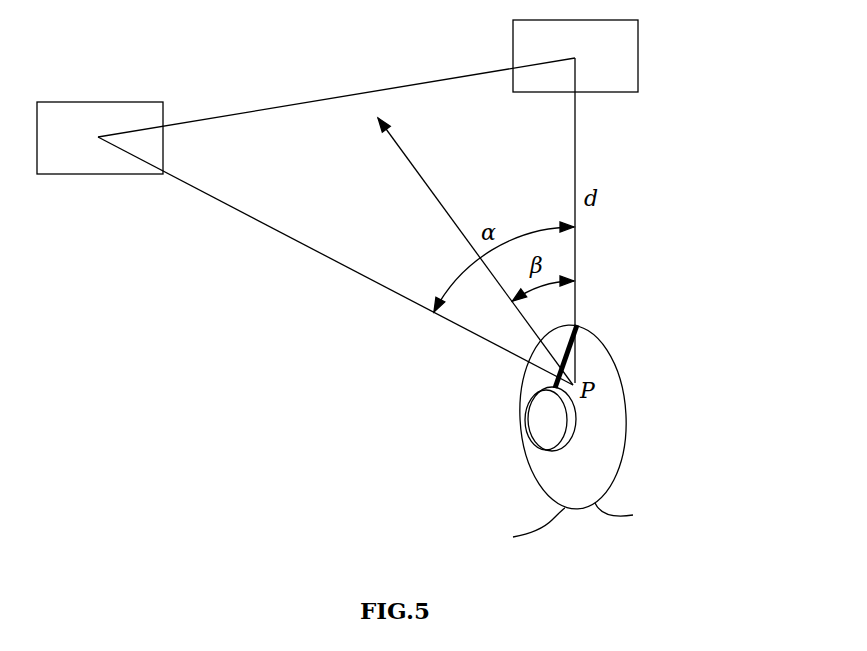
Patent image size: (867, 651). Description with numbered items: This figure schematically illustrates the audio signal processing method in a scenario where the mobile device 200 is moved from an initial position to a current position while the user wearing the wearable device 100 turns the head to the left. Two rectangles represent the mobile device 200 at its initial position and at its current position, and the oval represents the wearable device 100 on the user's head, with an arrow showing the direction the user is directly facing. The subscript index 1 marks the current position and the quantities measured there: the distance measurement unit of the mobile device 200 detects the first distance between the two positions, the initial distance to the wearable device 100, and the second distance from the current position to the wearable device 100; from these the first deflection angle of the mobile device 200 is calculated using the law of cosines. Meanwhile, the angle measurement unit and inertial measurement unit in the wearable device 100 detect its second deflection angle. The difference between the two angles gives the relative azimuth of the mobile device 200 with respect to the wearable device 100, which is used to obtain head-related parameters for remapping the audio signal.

The mobile device 200 is at (638, 62).
The wearable device 100 is at (538, 424).
The index of first base station O1 (distances s1, d1) 1 is at (336, 221).